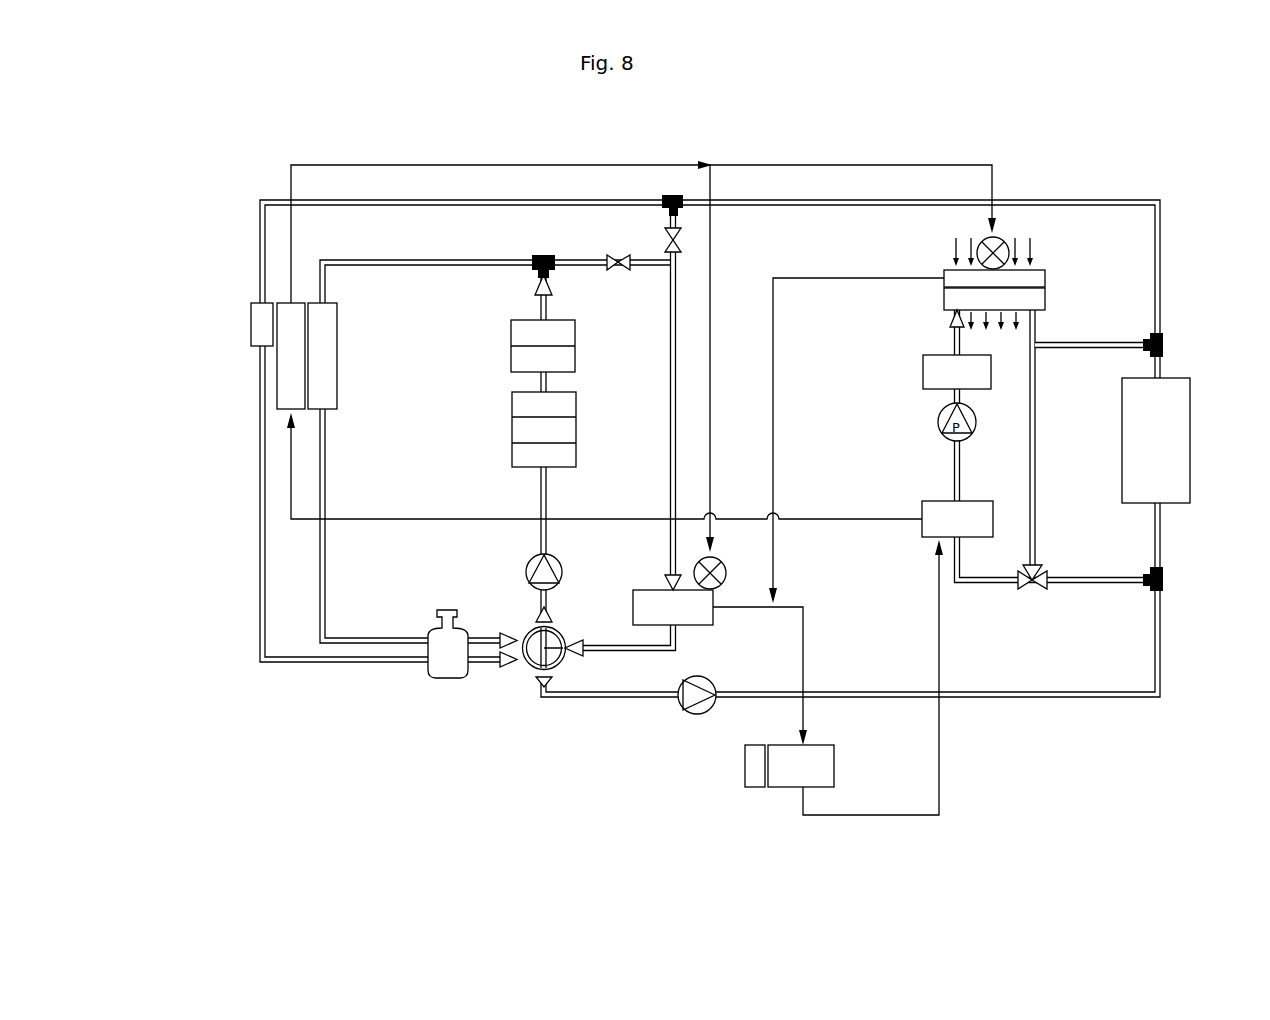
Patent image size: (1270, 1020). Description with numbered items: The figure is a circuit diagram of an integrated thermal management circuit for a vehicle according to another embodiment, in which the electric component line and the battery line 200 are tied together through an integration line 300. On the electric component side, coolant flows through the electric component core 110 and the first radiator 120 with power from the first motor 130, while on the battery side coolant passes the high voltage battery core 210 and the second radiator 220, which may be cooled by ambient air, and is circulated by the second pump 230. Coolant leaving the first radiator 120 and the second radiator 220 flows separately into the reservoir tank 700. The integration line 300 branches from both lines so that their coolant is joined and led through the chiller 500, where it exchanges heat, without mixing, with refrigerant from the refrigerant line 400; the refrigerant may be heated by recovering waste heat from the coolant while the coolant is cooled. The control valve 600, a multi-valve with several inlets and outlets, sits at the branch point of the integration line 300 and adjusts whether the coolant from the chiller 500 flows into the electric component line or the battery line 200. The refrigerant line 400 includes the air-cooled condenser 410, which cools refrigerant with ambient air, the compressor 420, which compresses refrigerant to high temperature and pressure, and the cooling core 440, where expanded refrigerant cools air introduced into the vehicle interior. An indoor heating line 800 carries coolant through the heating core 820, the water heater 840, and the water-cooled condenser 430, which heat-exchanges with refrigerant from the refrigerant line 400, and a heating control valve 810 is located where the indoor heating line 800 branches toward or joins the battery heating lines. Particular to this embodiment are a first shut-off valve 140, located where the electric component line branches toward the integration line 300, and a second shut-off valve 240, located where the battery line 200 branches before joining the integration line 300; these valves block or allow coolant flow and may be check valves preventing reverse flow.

The electric component core 110 is at (518, 398).
The first radiator 120 is at (337, 402).
The first motor 130 is at (527, 563).
The first shut-off valve 140 is at (620, 272).
The battery line 200 is at (1080, 200).
The high voltage battery core 210 is at (1183, 505).
The second radiator 220 is at (253, 303).
The second pump 230 is at (685, 712).
The second shut-off valve 240 is at (668, 243).
The integration line 300 is at (668, 375).
The refrigerant line 400 is at (472, 165).
The air-cooled condenser 410 is at (285, 378).
The compressor 420 is at (835, 766).
The water-cooled condenser 430 is at (930, 500).
The cooling core 440 is at (1048, 278).
The chiller 500 is at (673, 607).
The control valve 600 is at (533, 668).
The reservoir tank 700 is at (442, 678).
The indoor heating line 800 is at (985, 582).
The heating control valve 810 is at (1033, 592).
The heating core 820 is at (1048, 298).
The water heater 840 is at (922, 375).